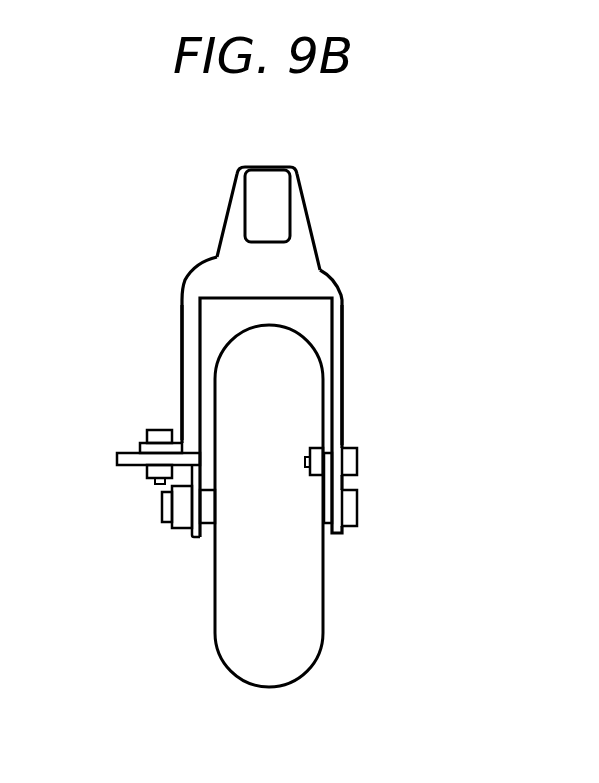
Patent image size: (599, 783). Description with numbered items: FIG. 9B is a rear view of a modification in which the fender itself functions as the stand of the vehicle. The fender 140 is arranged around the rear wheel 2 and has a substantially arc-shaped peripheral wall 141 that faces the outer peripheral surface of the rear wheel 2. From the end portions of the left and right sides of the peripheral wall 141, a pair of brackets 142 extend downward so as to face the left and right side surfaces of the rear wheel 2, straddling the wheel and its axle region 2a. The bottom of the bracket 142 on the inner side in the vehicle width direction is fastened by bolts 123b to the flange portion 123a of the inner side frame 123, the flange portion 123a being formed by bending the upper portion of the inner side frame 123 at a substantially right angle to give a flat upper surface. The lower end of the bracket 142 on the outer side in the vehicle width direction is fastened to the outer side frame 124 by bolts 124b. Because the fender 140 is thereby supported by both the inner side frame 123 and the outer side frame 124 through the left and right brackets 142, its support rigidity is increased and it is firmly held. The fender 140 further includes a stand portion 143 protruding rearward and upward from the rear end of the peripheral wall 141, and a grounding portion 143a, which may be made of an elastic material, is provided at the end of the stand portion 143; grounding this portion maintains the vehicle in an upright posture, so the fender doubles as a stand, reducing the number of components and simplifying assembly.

The fender 140 is at (265, 327).
The peripheral wall 141 is at (190, 268).
The brackets 142 is at (182, 342).
The stand portion 143 is at (231, 180).
The grounding portion 143a is at (276, 168).
The inner side frame 123 is at (190, 512).
The flange portion 123a is at (128, 465).
The bolts 123b is at (158, 428).
The outer side frame 124 is at (338, 512).
The bolts 124b is at (357, 460).
The rear wheel 2 is at (323, 585).
The wheel axle spacer 2a is at (357, 505).